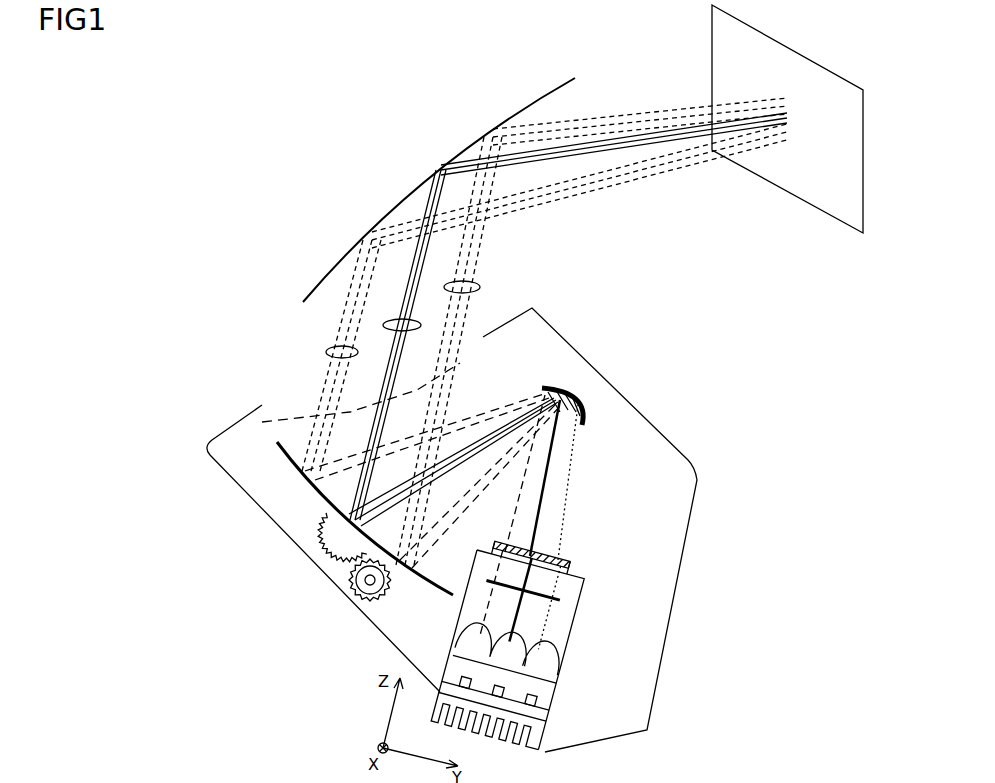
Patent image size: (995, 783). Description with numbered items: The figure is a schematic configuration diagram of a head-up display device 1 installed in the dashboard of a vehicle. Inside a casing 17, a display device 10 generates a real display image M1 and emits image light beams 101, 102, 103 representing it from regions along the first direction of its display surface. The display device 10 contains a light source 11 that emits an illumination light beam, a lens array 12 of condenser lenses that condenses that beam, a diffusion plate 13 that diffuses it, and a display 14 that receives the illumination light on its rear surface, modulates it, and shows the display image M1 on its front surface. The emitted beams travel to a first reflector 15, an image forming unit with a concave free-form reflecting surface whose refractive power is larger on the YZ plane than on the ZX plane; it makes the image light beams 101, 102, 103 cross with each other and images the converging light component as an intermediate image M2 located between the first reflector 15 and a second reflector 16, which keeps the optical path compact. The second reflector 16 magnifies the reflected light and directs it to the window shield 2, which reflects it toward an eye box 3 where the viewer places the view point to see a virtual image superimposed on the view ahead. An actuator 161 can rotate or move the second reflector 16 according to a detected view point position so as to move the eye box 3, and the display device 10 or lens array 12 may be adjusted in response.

The head-up display device 1 is at (700, 306).
The window shield 2 is at (350, 250).
The eye box 3 is at (733, 80).
The display device 10 is at (582, 636).
The light source 11 is at (498, 691).
The lens array 12 is at (504, 664).
The diffusion plate 13 is at (522, 590).
The display 14 is at (530, 557).
The display image M1 is at (531, 554).
The first reflector 15 is at (563, 432).
The intermediate image M2 is at (489, 432).
The second reflector 16 is at (322, 496).
The actuator 161 is at (352, 584).
The casing 17 is at (700, 456).
The image light beam 101 is at (328, 350).
The image light beam 102 is at (425, 318).
The image light beam 103 is at (480, 287).